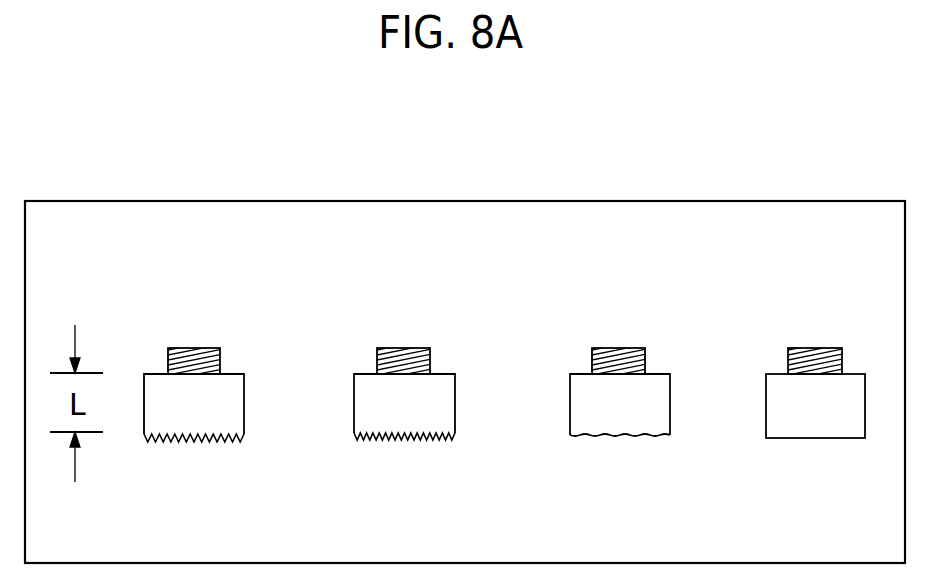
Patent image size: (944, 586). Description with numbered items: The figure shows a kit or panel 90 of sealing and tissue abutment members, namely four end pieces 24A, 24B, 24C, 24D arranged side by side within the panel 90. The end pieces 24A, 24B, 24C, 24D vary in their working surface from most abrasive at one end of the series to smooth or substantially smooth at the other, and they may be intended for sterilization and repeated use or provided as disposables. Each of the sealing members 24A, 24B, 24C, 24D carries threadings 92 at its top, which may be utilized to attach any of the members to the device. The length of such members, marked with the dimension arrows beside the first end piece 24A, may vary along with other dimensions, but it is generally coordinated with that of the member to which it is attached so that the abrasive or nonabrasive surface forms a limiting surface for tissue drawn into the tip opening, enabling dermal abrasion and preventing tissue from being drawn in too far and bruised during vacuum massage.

The panel 90 is at (670, 188).
The threadings 92 is at (203, 356).
The end piece 24A is at (204, 426).
The end piece 24B is at (413, 425).
The end piece 24C is at (627, 425).
The end piece 24D is at (816, 427).